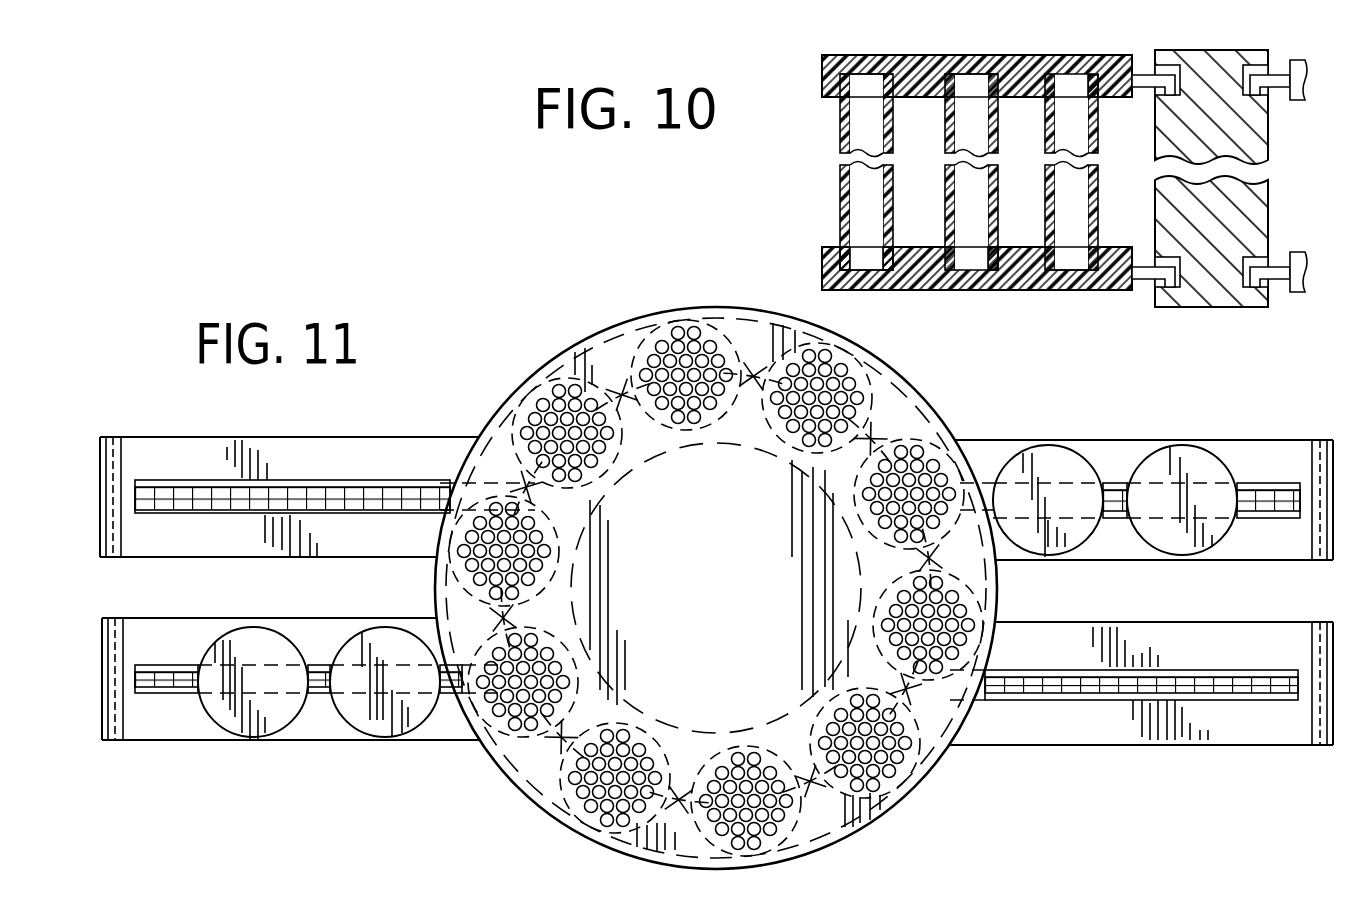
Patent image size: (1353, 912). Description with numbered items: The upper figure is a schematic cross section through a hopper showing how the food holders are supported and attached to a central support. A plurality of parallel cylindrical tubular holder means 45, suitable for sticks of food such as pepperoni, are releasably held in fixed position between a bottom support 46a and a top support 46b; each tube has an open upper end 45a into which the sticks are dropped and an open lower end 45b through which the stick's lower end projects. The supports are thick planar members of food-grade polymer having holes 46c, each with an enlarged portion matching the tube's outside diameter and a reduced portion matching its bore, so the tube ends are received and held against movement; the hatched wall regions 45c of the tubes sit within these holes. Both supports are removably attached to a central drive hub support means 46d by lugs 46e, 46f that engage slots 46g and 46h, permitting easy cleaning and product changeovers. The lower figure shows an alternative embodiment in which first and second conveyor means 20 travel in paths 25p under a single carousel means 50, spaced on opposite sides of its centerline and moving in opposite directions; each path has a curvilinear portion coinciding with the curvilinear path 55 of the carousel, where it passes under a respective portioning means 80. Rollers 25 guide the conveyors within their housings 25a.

In FIG. 10, the tubular holder means 45 is at (840, 122).
In FIG. 10, the open upper end 45a is at (963, 80).
In FIG. 10, the open lower end 45b is at (974, 269).
In FIG. 10, the tube wall portion 45c is at (1104, 75).
In FIG. 10, the bottom support 46a is at (822, 73).
In FIG. 10, the top support 46b is at (823, 270).
In FIG. 10, the holes 46c is at (958, 76).
In FIG. 10, the central drive hub support means 46d is at (1258, 126).
In FIG. 10, the lug 46e is at (1142, 76).
In FIG. 10, the lug 46f is at (1140, 268).
In FIG. 10, the slot 46g is at (1183, 70).
In FIG. 10, the slot 46h is at (1187, 272).
In FIG. 11, the conveyor means 20 is at (304, 438).
In FIG. 11, the roller 25 is at (190, 683).
In FIG. 11, the conduit housing 25a is at (1035, 438).
In FIG. 11, the conveyor path 25p is at (146, 531).
In FIG. 11, the carousel means 50 is at (600, 337).
In FIG. 11, the curvilinear path 55 is at (634, 301).
In FIG. 11, the portioning means 80 is at (548, 375).